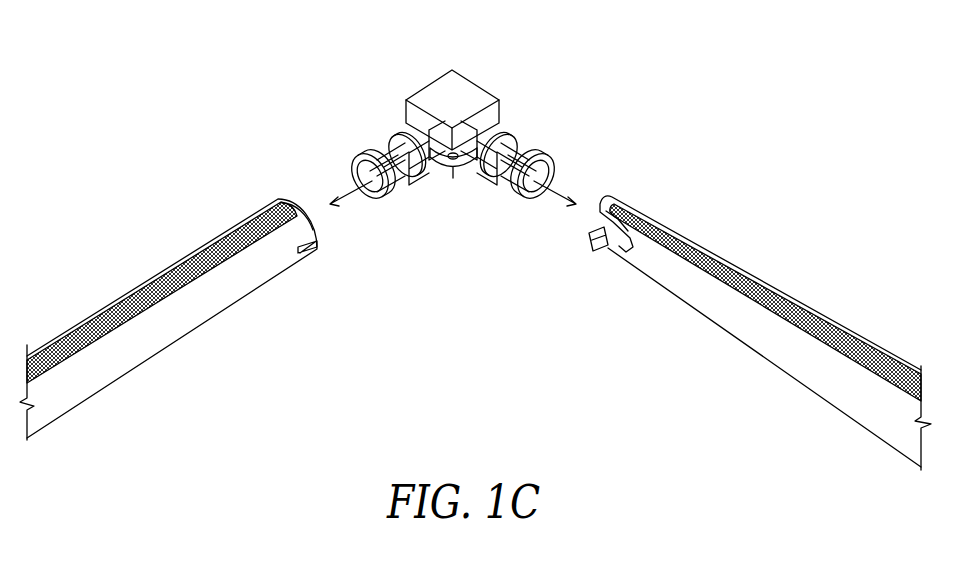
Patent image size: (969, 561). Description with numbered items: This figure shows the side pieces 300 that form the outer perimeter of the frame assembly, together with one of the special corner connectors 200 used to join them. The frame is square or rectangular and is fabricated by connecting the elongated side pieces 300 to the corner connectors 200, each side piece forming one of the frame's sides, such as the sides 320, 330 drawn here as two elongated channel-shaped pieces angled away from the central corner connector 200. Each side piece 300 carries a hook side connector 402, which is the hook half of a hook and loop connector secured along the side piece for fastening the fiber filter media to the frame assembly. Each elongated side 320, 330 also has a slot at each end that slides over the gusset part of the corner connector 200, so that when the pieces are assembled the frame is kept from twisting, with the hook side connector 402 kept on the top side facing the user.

The corner connector 200 is at (472, 81).
The side piece 300 is at (748, 313).
The side 320 is at (207, 245).
The side 330 is at (783, 288).
The hook side connector 402 is at (727, 260).